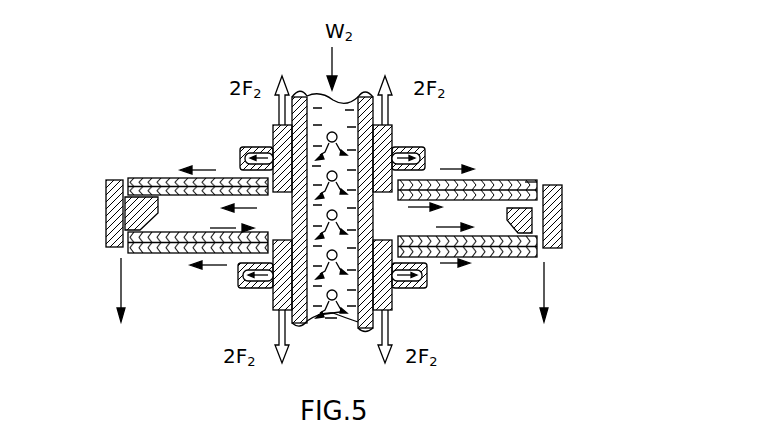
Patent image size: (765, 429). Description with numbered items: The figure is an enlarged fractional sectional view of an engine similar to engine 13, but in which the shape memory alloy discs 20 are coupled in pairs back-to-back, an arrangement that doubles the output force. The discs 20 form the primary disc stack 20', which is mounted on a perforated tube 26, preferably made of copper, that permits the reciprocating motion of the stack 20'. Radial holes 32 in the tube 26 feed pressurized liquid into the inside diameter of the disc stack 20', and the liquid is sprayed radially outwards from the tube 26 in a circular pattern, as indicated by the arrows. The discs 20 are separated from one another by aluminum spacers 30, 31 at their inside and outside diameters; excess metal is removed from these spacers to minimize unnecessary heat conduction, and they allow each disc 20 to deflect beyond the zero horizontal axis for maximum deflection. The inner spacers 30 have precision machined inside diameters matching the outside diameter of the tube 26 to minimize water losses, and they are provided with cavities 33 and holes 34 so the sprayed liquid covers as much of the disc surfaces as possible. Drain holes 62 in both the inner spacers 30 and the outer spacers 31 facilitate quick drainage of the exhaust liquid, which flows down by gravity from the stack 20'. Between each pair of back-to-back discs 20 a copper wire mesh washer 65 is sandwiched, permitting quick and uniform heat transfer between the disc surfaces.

The engine 13 is at (541, 147).
The SMA-CDS disc 20 is at (303, 227).
The primary SMA-CDS stack 20' is at (132, 190).
The perforated tube 26 is at (347, 100).
The spacer 30 is at (425, 148).
The spacer 31 is at (562, 218).
The radial hole 32 is at (336, 312).
The cavity 33 is at (243, 148).
The hole 34 is at (420, 298).
The drain hole 62 is at (548, 252).
The copper wire mesh washer 65 is at (525, 182).